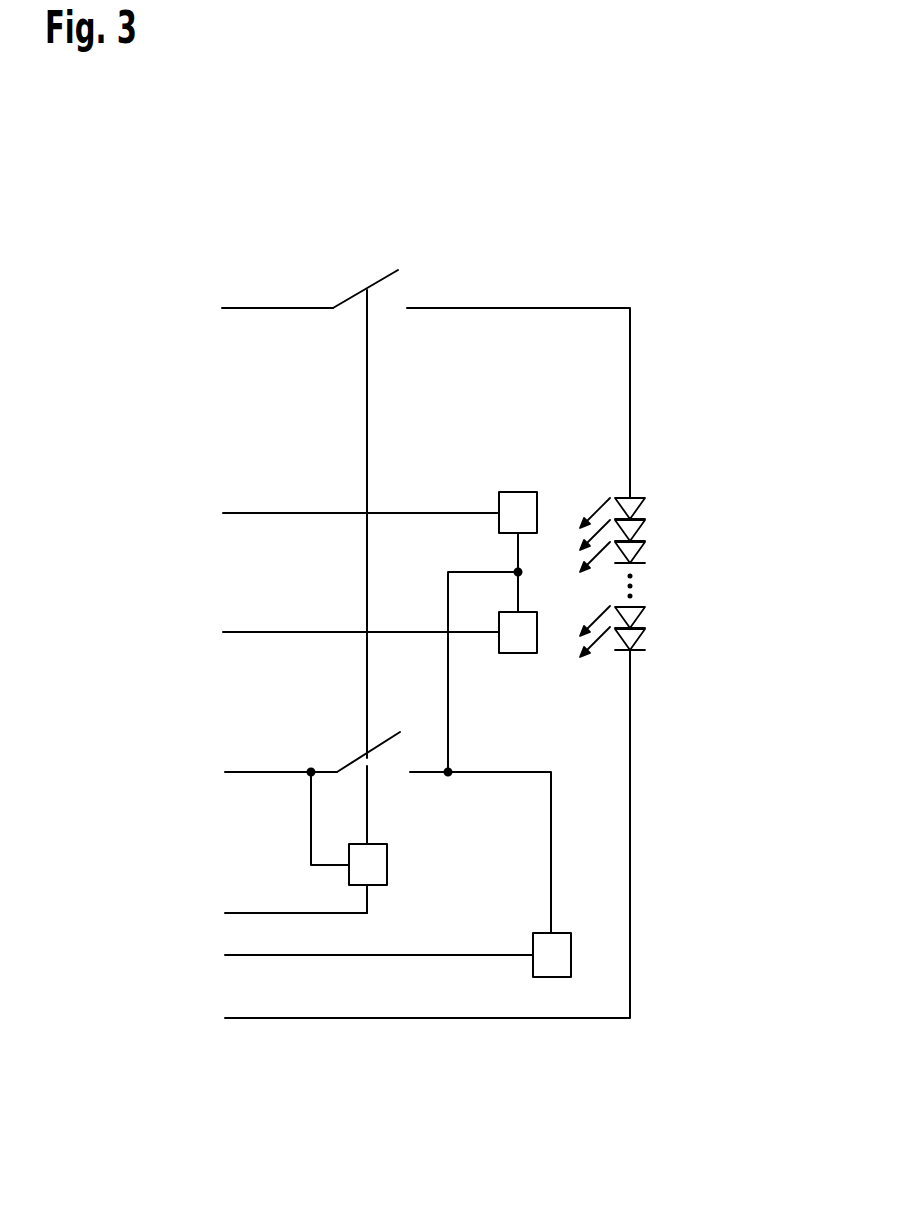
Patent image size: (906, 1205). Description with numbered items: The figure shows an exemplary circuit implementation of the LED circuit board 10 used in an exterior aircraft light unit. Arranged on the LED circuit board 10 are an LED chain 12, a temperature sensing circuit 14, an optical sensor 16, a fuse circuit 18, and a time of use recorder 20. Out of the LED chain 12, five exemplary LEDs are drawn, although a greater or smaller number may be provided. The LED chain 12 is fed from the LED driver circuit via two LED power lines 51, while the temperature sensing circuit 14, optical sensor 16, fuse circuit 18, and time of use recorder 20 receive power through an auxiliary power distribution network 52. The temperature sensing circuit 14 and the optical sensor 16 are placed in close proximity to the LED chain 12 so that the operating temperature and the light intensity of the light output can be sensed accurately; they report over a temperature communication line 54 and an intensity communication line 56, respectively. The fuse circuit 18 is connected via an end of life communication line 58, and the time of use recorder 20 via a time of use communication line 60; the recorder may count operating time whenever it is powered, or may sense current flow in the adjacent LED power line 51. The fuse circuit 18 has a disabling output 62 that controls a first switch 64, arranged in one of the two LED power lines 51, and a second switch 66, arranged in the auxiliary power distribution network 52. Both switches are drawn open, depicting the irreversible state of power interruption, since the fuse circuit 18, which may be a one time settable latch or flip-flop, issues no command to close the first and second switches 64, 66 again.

The LED circuit board 10 is at (658, 219).
The LED chain 12 is at (695, 518).
The temperature sensing circuit 14 is at (518, 492).
The optical sensor 16 is at (518, 653).
The fuse circuit 18 is at (387, 863).
The time of use recorder 20 is at (571, 955).
The LED power lines 51 is at (226, 309).
The auxiliary power distribution network 52 is at (229, 774).
The temperature communication line 54 is at (227, 514).
The intensity communication line 56 is at (227, 634).
The end of life communication line 58 is at (229, 915).
The time of use communication line 60 is at (229, 957).
The disabling output 62 is at (369, 812).
The first switch 64 is at (351, 297).
The second switch 66 is at (353, 758).